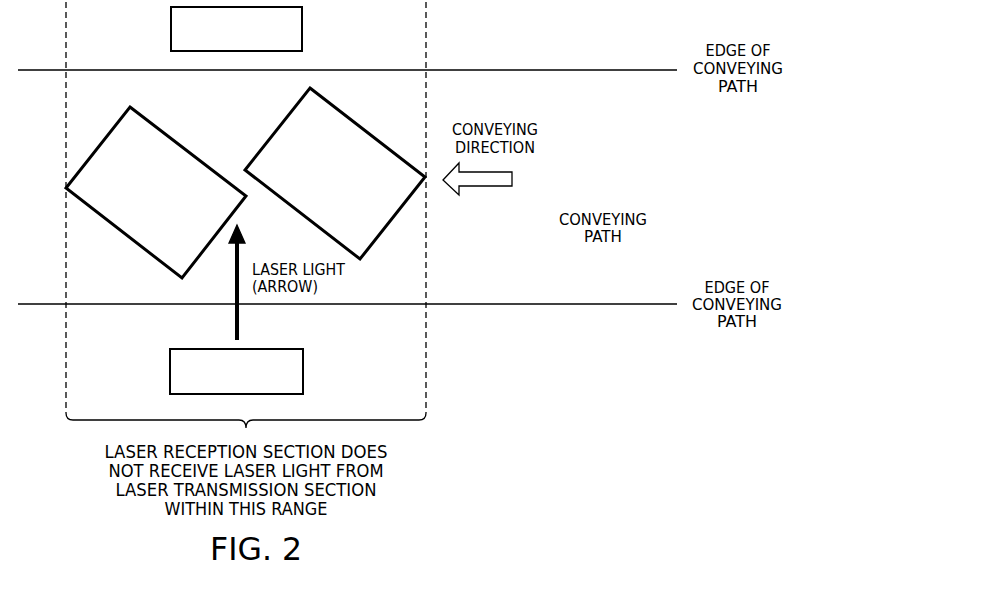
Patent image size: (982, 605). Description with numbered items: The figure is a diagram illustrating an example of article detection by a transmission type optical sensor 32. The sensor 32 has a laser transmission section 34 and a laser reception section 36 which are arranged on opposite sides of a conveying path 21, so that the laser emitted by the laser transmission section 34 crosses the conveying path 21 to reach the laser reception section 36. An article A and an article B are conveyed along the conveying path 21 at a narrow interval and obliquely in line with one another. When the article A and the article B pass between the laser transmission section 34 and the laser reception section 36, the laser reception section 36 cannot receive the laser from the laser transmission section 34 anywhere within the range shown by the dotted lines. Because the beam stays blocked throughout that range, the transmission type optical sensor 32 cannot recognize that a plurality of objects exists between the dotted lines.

The conveying path 21 is at (583, 288).
The transmission type optical sensor 32 is at (397, 362).
The laser transmission section 34 is at (302, 364).
The laser reception section 36 is at (297, 42).
The article A is at (167, 132).
The article B is at (366, 130).